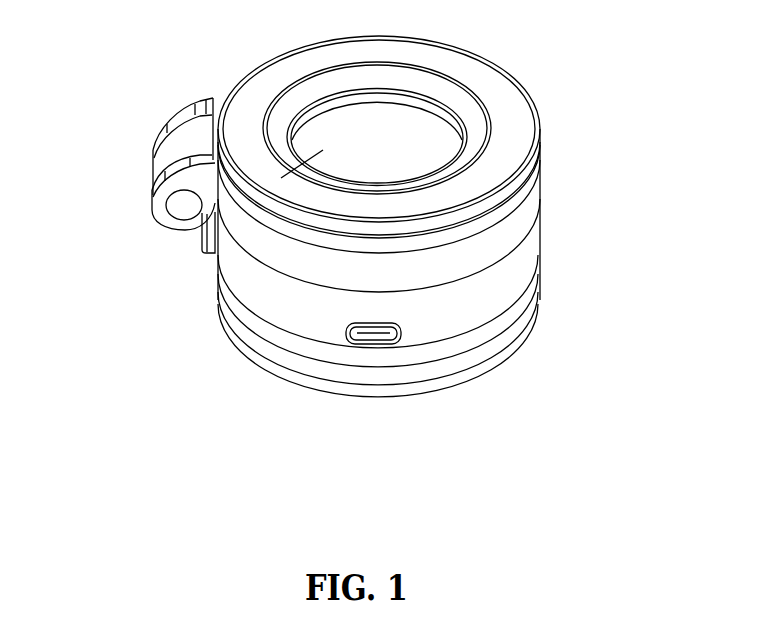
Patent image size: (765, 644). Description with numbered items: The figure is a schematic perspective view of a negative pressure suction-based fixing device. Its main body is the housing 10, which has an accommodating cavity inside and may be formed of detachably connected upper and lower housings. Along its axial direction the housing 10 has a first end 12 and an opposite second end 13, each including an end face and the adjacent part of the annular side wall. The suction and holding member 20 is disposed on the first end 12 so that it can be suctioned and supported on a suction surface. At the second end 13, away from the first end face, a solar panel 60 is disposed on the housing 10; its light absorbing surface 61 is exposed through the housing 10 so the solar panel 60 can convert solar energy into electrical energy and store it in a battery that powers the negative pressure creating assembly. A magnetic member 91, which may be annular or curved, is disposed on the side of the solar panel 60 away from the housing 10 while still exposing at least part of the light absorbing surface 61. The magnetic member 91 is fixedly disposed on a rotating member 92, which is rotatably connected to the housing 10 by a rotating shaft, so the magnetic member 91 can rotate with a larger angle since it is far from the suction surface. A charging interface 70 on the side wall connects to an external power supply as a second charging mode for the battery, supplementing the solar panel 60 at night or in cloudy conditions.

The housing 10 is at (518, 280).
The first end 12 is at (268, 315).
The second end 13 is at (525, 215).
The suction and holding member 20 is at (513, 358).
The solar panel 60 is at (397, 140).
The light absorbing surface 61 is at (211, 142).
The charging interface 70 is at (380, 343).
The magnetic member 91 is at (452, 67).
The rotating member 92 is at (190, 224).